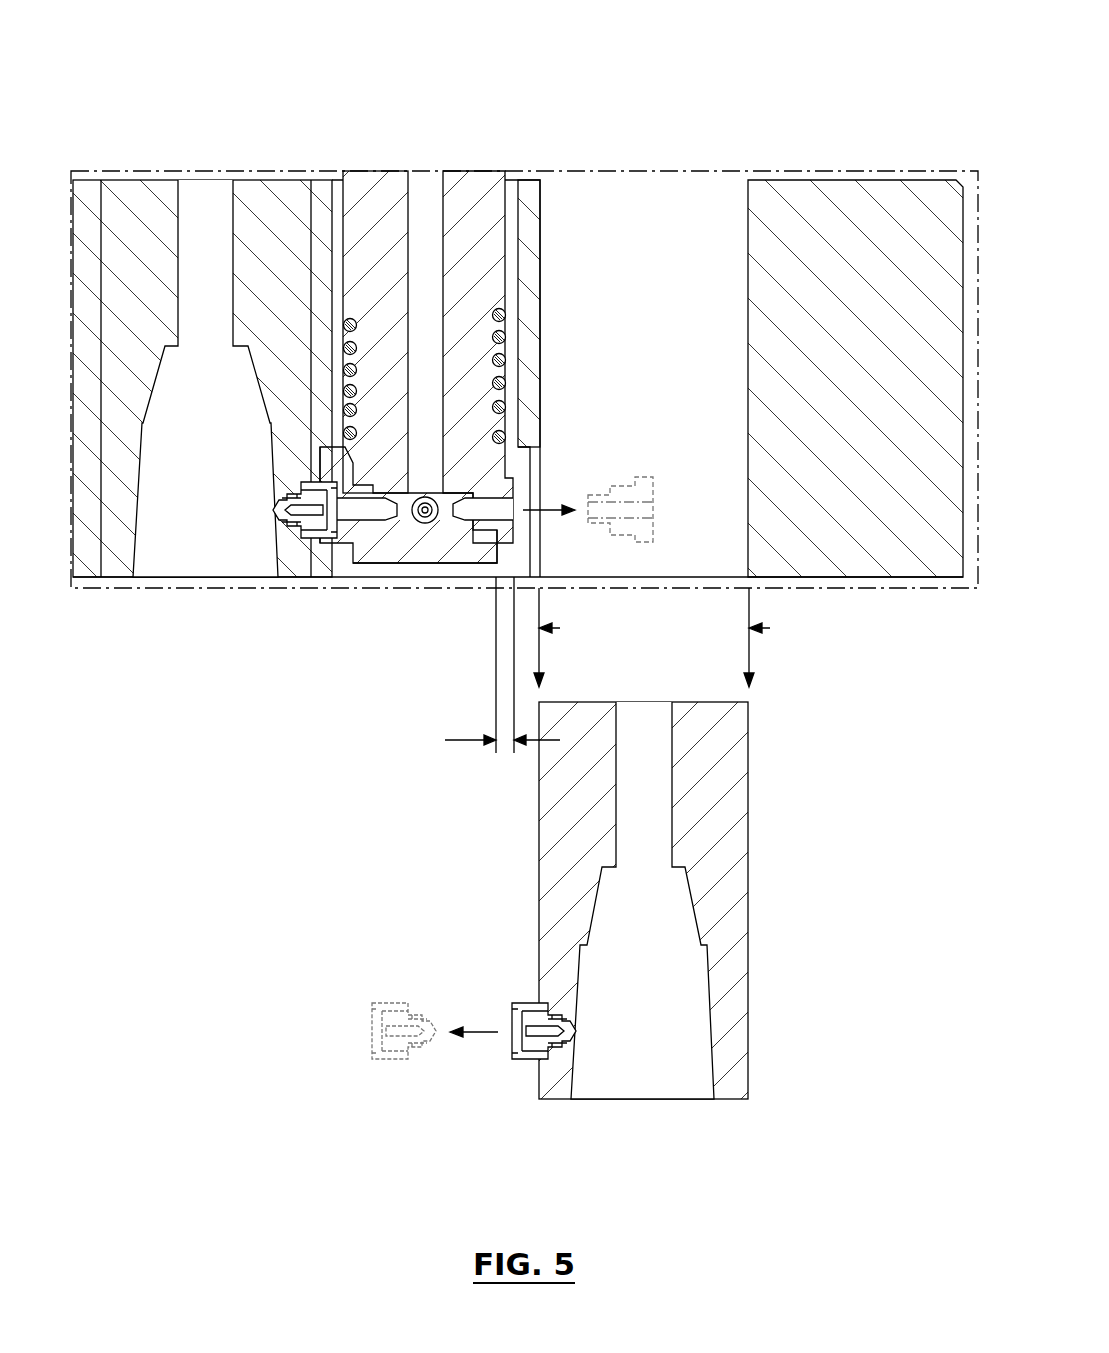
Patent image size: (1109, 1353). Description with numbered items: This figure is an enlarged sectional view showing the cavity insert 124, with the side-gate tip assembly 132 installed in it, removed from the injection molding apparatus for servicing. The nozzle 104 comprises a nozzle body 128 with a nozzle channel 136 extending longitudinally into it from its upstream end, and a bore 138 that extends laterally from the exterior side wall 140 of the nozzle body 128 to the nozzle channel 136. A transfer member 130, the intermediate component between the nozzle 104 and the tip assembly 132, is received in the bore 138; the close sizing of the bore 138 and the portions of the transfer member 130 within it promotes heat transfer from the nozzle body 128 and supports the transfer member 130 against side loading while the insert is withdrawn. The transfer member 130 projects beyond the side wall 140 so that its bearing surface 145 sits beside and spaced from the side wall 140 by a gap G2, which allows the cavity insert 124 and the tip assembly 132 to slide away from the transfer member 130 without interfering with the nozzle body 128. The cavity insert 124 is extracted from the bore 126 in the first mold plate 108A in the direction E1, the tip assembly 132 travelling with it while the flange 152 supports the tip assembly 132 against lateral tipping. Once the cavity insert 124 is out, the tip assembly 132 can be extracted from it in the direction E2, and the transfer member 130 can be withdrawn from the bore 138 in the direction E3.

The nozzle 104 is at (371, 111).
The bore 126 is at (748, 210).
The first mold plate 108A is at (852, 205).
The nozzle channel 136 is at (506, 425).
The transfer member 130 is at (478, 468).
The bearing surface 145 is at (513, 530).
The exterior side wall 140 is at (334, 555).
The bore 138 is at (407, 545).
The nozzle body 128 is at (430, 544).
The cavity insert 124 is at (727, 878).
The side-gate tip assembly 132 is at (383, 978).
The flange 152 is at (541, 1061).
The direction of extraction E1 is at (556, 628).
The direction of tip assembly extraction E2 is at (474, 1032).
The direction of transfer member extraction E3 is at (556, 510).
The gap G2 is at (481, 666).